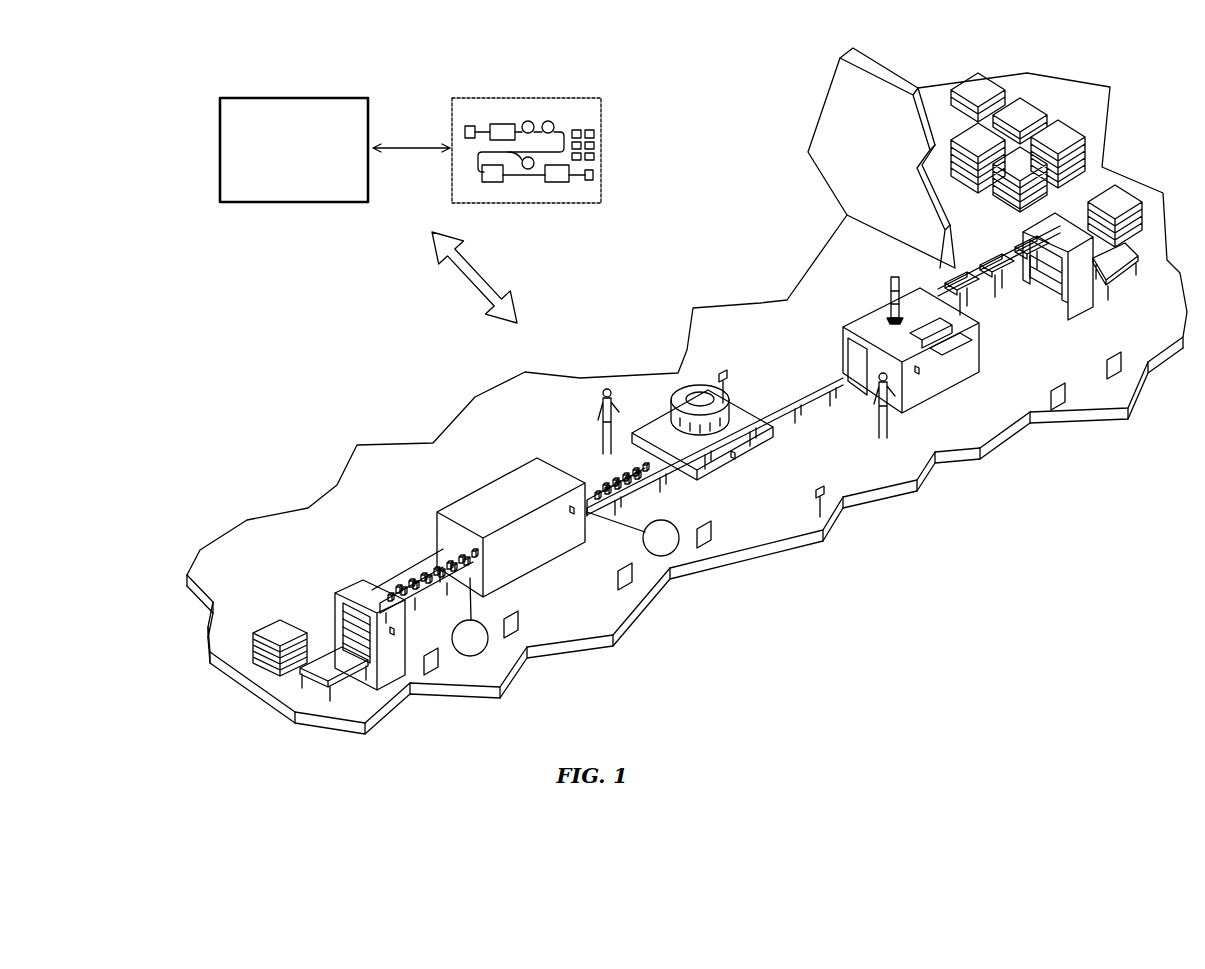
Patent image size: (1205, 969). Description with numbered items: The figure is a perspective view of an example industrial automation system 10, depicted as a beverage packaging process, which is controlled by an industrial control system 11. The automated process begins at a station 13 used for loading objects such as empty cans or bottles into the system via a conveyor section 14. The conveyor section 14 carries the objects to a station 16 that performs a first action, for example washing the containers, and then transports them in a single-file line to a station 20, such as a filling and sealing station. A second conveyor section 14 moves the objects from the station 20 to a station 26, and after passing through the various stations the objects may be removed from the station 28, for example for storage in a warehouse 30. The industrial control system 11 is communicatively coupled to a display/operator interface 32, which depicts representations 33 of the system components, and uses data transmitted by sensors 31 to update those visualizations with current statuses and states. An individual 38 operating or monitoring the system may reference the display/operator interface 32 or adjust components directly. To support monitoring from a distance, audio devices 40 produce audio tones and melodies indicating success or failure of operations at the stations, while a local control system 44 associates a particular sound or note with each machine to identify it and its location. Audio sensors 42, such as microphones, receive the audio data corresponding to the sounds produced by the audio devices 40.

The industrial automation system 10 is at (757, 621).
The industrial control system 11 is at (297, 203).
The station 13 is at (350, 585).
The conveyor section 14 is at (418, 558).
The station 16 is at (537, 573).
The station 20 is at (742, 462).
The station 26 is at (940, 393).
The station 28 is at (1085, 314).
The warehouse 30 is at (1034, 101).
The sensor 31 is at (483, 655).
The display/operator interface 32 is at (603, 151).
The representations 33 is at (507, 113).
The individual 38 is at (616, 406).
The audio device 40 is at (396, 633).
The audio sensor 42 is at (434, 672).
The local control system 44 is at (516, 632).